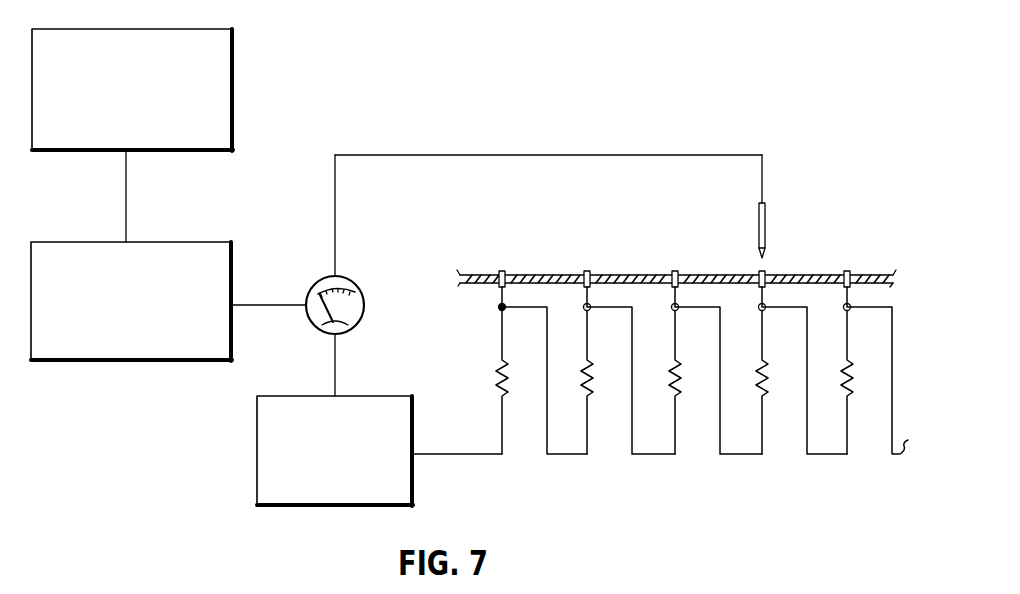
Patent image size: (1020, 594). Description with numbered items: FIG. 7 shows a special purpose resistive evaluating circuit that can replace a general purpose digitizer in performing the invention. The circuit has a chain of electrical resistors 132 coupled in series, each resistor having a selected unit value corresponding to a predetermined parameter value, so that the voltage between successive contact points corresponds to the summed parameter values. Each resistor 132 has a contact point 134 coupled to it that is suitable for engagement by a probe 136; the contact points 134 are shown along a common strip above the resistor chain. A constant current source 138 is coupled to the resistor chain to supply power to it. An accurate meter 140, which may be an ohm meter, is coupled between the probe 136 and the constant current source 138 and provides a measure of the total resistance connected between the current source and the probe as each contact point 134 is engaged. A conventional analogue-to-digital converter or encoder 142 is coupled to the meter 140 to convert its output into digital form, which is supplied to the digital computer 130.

The digital computer 130 is at (236, 80).
The encoder 142 is at (233, 250).
The meter 140 is at (353, 284).
The constant current source 138 is at (257, 437).
The contact point 134 is at (583, 272).
The resistor 132 is at (580, 396).
The probe 136 is at (768, 241).